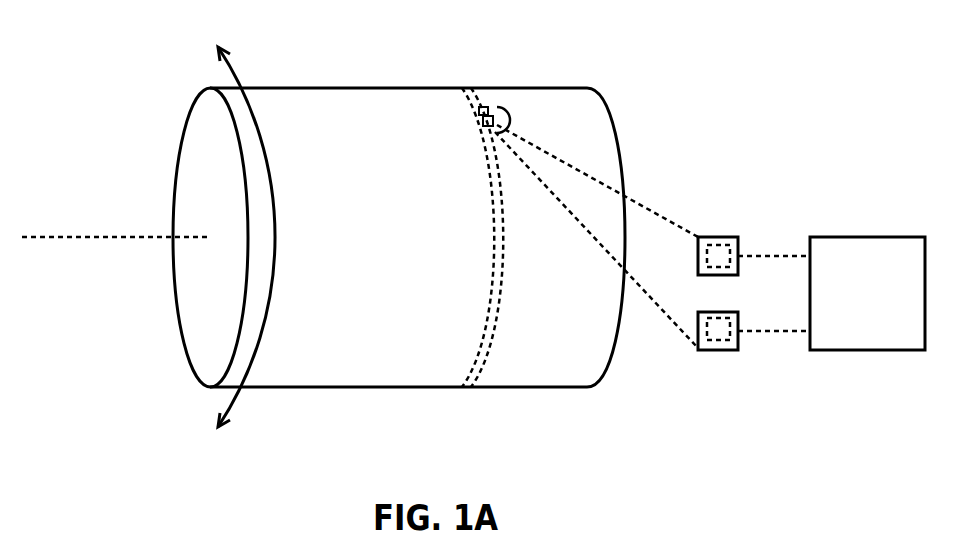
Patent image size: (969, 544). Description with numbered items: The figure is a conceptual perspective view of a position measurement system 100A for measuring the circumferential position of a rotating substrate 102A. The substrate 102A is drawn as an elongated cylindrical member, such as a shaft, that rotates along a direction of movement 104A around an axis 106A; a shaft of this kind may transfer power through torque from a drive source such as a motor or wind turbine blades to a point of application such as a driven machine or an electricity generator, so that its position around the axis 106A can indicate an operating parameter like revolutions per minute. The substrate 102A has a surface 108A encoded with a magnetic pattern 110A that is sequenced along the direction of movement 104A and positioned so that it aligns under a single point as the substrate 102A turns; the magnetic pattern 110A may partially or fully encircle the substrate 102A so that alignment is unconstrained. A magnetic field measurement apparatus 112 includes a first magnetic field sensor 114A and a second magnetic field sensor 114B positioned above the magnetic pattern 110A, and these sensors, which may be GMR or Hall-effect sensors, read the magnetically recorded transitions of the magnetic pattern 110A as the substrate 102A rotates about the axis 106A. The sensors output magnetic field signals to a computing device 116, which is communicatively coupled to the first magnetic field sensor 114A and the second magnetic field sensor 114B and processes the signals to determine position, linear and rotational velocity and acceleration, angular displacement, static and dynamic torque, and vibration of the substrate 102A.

The position measurement system 100A is at (665, 42).
The rotating substrate 102A is at (382, 238).
The direction of movement 104A is at (234, 74).
The axis 106A is at (58, 237).
The surface 108A is at (323, 97).
The magnetic pattern 110A is at (463, 87).
The magnetic field measurement apparatus 112 is at (513, 120).
The first magnetic field sensor 114A is at (717, 237).
The second magnetic field sensor 114B is at (717, 350).
The computing device 116 is at (885, 307).